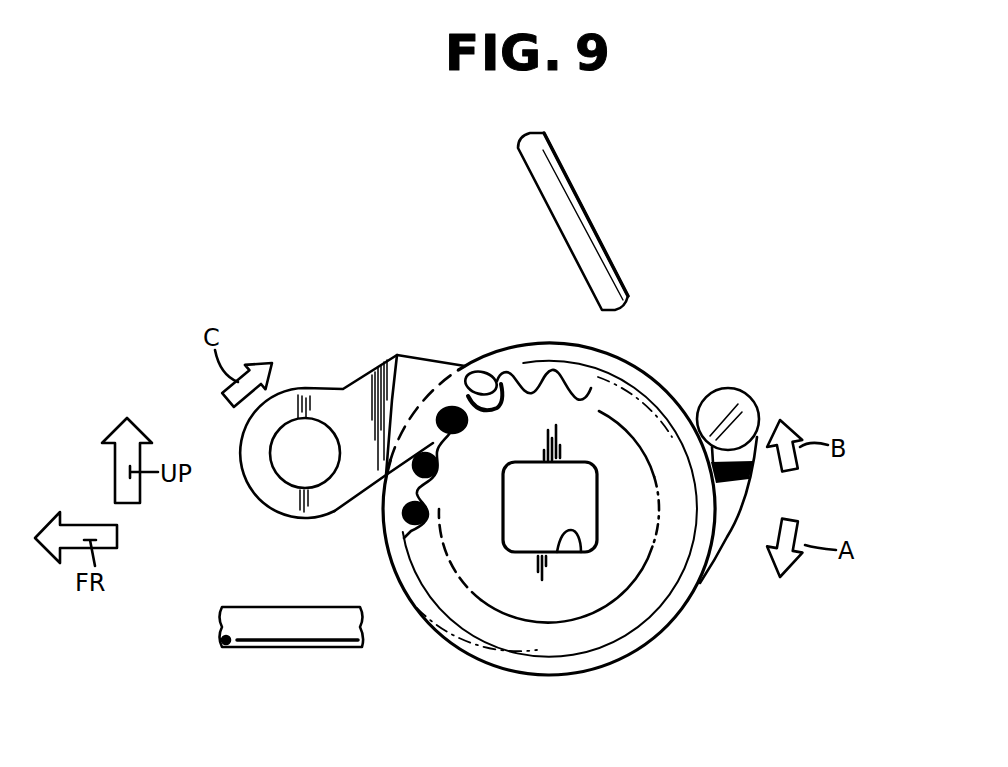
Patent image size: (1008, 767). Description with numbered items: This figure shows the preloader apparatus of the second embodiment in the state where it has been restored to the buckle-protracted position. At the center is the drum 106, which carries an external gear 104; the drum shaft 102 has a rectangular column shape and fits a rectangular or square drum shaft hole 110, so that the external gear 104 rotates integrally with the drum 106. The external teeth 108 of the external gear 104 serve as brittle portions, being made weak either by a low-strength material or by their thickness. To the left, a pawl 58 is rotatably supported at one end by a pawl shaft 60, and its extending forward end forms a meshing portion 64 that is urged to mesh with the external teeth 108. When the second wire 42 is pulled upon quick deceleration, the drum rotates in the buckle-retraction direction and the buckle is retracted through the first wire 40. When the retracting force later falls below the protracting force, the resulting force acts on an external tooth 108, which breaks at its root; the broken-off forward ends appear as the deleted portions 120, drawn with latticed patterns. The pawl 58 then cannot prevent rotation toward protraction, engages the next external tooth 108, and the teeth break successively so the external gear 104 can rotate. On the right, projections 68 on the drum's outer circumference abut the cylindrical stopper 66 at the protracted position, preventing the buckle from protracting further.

The first wire 40 is at (290, 630).
The second wire 42 is at (573, 228).
The pawl 58 is at (352, 388).
The pawl shaft 60 is at (293, 452).
The meshing portion 64 is at (522, 372).
The stopper 66 is at (743, 407).
The projections 68 is at (745, 485).
The drum shaft 102 is at (532, 532).
The external gear 104 is at (576, 383).
The drum 106 is at (658, 378).
The external teeth 108 is at (460, 370).
The drum shaft hole 110 is at (581, 552).
The deleted portions 120 is at (413, 482).